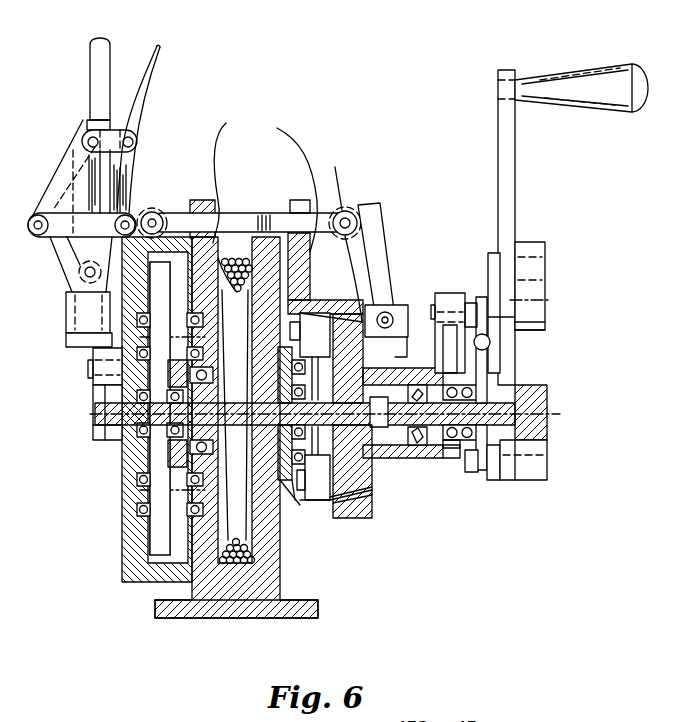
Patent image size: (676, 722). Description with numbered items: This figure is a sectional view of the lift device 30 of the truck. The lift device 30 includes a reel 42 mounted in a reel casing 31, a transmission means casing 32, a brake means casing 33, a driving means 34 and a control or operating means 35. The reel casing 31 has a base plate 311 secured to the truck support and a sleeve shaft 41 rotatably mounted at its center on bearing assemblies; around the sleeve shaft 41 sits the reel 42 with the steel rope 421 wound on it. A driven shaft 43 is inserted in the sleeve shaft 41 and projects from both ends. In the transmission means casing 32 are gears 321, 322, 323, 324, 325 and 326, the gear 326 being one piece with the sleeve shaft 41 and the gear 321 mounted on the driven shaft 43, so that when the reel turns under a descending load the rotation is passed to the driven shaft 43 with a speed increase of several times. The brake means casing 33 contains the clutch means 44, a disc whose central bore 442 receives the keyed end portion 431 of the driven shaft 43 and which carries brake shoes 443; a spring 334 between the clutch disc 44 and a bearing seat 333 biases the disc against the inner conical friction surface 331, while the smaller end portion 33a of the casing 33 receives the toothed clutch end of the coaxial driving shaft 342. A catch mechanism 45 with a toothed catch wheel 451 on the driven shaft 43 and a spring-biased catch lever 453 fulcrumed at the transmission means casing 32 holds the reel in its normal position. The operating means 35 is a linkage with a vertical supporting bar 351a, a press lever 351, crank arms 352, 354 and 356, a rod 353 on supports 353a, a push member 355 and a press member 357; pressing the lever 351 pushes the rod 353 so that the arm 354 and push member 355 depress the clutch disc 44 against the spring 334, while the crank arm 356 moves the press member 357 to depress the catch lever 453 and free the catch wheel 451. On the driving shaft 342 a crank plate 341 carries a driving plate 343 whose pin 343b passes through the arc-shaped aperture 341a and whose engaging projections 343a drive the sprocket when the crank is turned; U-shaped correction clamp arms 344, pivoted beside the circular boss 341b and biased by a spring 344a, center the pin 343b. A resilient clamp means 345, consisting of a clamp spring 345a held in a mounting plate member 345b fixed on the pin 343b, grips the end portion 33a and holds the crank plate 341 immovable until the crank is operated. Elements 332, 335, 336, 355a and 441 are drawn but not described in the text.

The lift device 30 is at (438, 188).
The reel casing 31 is at (265, 582).
The base plate 311 is at (318, 608).
The transmission means casing 32 is at (122, 578).
The gear 321 is at (163, 427).
The gear 322 is at (157, 545).
The gear 323 is at (152, 211).
The gear 324 is at (180, 508).
The gear 325 is at (198, 214).
The gear 326 is at (187, 465).
The brake means casing 33 is at (370, 520).
The end portion of brake means casing 33a is at (447, 460).
The inner conical friction surface 331 is at (339, 175).
The housing wall 332 is at (318, 300).
The bearing seat 333 is at (288, 505).
The spring 334 is at (325, 320).
The lever 335 is at (405, 330).
The bearing 336 is at (470, 470).
The driving means 34 is at (539, 298).
The crank plate 341 is at (508, 167).
The arc-shaped aperture 341a is at (508, 303).
The circular boss 341b is at (515, 450).
The driving shaft 342 is at (535, 421).
The driving plate 343 is at (545, 252).
The engaging projections 343a is at (533, 322).
The pin 343b is at (493, 318).
The correction clamp arms 344 is at (500, 470).
The spring 344a is at (490, 342).
The resilient clamp means 345 is at (450, 292).
The clamp spring 345a is at (449, 460).
The mounting plate member 345b is at (475, 300).
The operating means 35 is at (122, 176).
The press lever 351 is at (150, 66).
The vertical supporting bar 351a is at (97, 42).
The crank arm 352 is at (52, 213).
The rod 353 is at (168, 218).
The supports 353a is at (265, 183).
The crank arm 354 is at (380, 228).
The push member 355 is at (400, 303).
The cam slot 355a is at (372, 216).
The crank arm 356 is at (77, 147).
The press member 357 is at (80, 345).
The sleeve shaft 41 is at (234, 330).
The reel 42 is at (228, 258).
The steel rope 421 is at (248, 262).
The driven shaft 43 is at (318, 465).
The end portion of shaft 431 is at (452, 447).
The clutch means 44 is at (340, 510).
The pivot pin 441 is at (363, 212).
The central bore 442 is at (370, 463).
The brake shoes 443 is at (310, 255).
The catch mechanism 45 is at (90, 437).
The toothed catch wheel 451 is at (105, 440).
The catch lever 453 is at (100, 365).